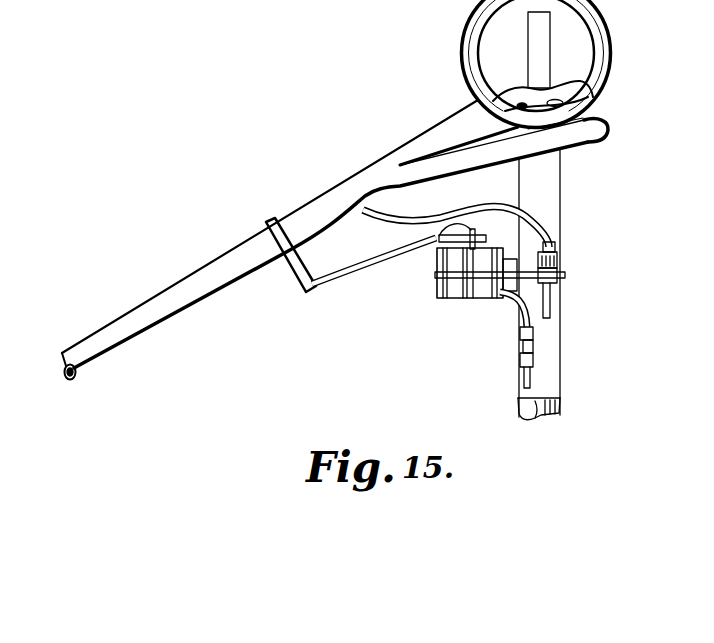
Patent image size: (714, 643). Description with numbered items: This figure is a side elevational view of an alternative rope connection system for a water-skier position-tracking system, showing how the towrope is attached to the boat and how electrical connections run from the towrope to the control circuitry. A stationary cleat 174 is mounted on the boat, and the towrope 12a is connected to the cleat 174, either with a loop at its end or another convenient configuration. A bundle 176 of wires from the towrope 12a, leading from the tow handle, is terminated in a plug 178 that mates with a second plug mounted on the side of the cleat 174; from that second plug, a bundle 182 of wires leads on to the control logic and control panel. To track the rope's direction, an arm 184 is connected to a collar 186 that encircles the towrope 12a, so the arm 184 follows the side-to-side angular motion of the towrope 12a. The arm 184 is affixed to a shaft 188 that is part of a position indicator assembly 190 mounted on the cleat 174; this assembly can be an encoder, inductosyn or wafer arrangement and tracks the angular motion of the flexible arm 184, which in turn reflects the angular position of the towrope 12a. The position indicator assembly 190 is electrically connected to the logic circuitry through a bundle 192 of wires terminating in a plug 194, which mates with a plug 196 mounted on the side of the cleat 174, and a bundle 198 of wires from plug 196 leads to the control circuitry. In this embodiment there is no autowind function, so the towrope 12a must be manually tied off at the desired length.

The towrope 12a is at (309, 212).
The stationary cleat 174 is at (558, 167).
The bundle of wires 176 is at (451, 206).
The plug 178 is at (556, 246).
The bundle of wires 182 is at (562, 295).
The arm 184 is at (349, 276).
The collar 186 is at (290, 262).
The shaft 188 is at (438, 242).
The position indicator assembly 190 is at (462, 296).
The bundle of wires 192 is at (517, 315).
The plug 194 is at (538, 336).
The plug 196 is at (537, 359).
The bundle of wires 198 is at (531, 384).